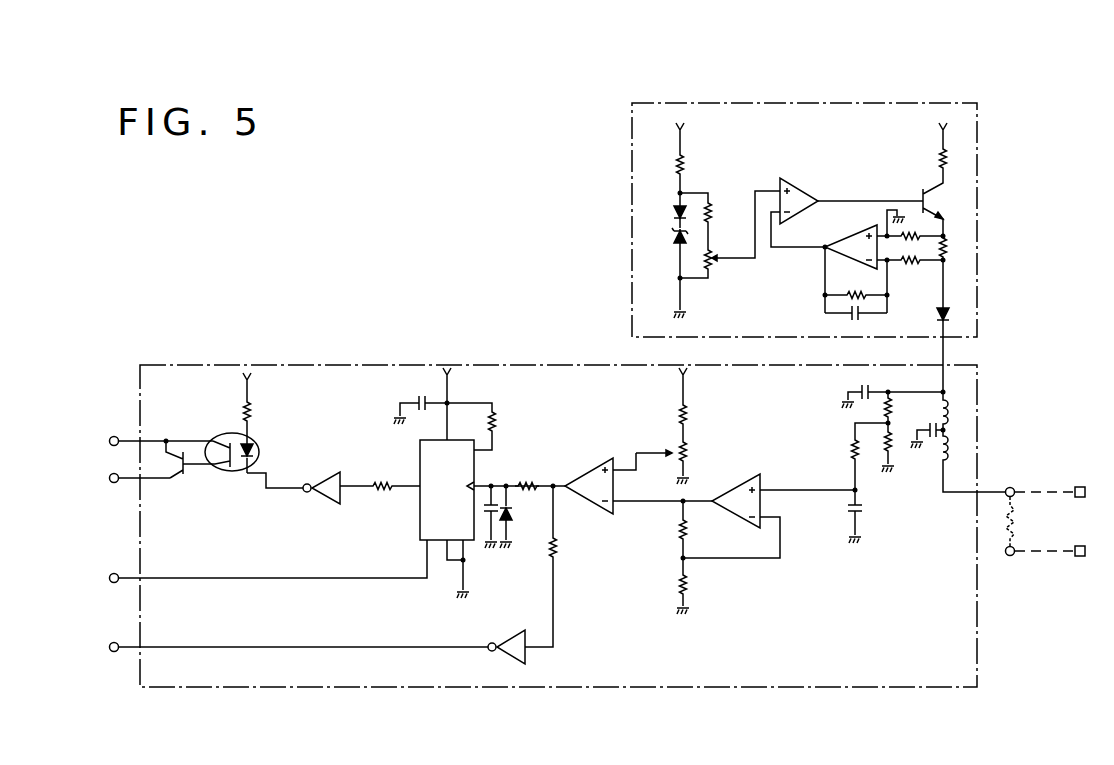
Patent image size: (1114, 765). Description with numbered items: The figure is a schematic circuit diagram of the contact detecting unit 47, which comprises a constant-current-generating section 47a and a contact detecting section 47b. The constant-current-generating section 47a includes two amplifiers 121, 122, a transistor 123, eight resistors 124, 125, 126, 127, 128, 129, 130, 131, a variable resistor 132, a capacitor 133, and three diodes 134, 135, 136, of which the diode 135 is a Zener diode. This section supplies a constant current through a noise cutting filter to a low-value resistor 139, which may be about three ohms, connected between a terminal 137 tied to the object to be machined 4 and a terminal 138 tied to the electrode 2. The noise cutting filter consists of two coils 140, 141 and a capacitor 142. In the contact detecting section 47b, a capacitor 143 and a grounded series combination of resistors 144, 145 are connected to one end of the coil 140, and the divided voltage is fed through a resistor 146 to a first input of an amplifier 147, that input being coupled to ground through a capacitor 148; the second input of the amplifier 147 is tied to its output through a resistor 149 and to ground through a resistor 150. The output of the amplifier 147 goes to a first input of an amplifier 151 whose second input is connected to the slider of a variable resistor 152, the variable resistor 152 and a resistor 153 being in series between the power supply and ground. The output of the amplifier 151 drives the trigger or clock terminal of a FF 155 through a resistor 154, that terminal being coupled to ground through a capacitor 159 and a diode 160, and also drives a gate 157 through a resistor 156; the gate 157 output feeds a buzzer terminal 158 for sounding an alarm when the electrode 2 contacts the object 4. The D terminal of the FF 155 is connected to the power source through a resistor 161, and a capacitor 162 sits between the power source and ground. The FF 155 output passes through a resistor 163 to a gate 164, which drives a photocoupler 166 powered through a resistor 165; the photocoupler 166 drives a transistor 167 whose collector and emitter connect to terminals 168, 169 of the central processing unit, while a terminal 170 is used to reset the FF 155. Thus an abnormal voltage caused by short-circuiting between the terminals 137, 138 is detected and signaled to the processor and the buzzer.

The electrode 2 is at (1050, 571).
The object to be machined 4 is at (1050, 479).
The contact detecting unit 47 is at (403, 176).
The constant-current-generating section 47a is at (907, 103).
The contact detecting section 47b is at (978, 662).
The amplifier 121 is at (789, 180).
The amplifier 122 is at (866, 234).
The transistor 123 is at (946, 196).
The resistor 124 is at (686, 170).
The resistor 125 is at (711, 211).
The resistor 126 is at (848, 292).
The resistor 127 is at (911, 266).
The resistor 128 is at (912, 229).
The resistor 129 is at (948, 247).
The resistor 130 is at (938, 158).
The resistor 131 is at (886, 222).
The variable resistor 132 is at (712, 276).
The capacitor 133 is at (848, 320).
The diode 134 is at (672, 214).
The Zener diode 135 is at (672, 238).
The diode 136 is at (953, 314).
The terminal 137 is at (1015, 488).
The terminal 138 is at (1012, 558).
The resistor 139 is at (1018, 520).
The coil 140 is at (950, 410).
The coil 141 is at (950, 452).
The capacitor 142 is at (930, 440).
The capacitor 143 is at (862, 386).
The resistor 144 is at (893, 408).
The resistor 145 is at (893, 455).
The resistor 146 is at (850, 449).
The amplifier 147 is at (741, 476).
The capacitor 148 is at (862, 512).
The resistor 149 is at (689, 530).
The resistor 150 is at (689, 585).
The amplifier 151 is at (598, 462).
The variable resistor 152 is at (690, 450).
The resistor 153 is at (690, 410).
The resistor 154 is at (528, 481).
The FF 155 is at (420, 536).
The resistor 156 is at (557, 546).
The gate 157 is at (526, 659).
The buzzer terminal 158 is at (109, 646).
The capacitor 159 is at (494, 536).
The diode 160 is at (514, 512).
The resistor 161 is at (496, 428).
The capacitor 162 is at (419, 397).
The resistor 163 is at (382, 489).
The gate 164 is at (322, 500).
The resistor 165 is at (253, 423).
The photocoupler 166 is at (229, 471).
The transistor 167 is at (180, 480).
The terminal 168 is at (109, 440).
The terminal 169 is at (109, 477).
The terminal 170 is at (109, 577).